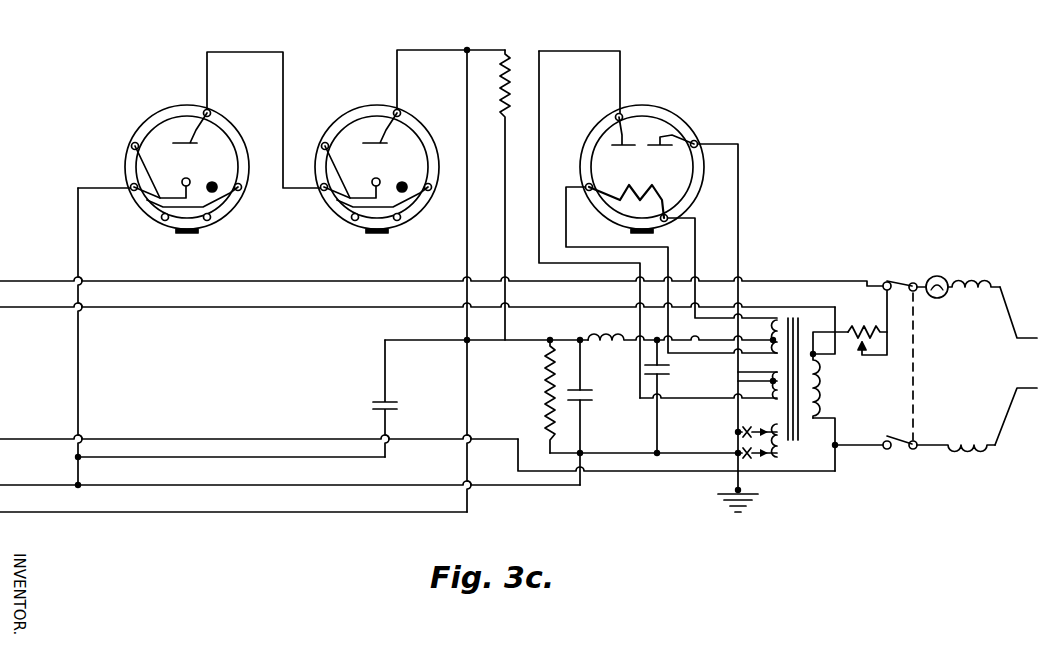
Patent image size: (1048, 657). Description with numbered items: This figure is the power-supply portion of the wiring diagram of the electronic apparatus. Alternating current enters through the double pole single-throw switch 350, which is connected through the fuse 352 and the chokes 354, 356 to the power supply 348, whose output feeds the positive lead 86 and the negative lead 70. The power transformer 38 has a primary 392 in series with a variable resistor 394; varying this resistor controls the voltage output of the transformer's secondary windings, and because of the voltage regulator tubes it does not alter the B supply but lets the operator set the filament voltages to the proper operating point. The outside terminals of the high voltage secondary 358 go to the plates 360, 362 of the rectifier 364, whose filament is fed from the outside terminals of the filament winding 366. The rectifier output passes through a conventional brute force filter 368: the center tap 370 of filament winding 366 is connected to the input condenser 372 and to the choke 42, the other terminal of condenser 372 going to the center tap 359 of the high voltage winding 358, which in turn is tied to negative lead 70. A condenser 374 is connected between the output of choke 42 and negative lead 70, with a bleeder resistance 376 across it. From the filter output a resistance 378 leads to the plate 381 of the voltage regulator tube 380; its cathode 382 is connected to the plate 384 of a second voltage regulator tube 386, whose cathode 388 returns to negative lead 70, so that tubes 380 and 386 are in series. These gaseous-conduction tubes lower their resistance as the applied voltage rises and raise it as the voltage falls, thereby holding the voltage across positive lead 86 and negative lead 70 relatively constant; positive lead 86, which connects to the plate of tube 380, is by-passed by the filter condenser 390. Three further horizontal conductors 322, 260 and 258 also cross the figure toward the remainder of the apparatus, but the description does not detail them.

The power transformer 38 is at (803, 451).
The choke 42 is at (609, 338).
The negative lead 70 is at (30, 484).
The positive lead 86 is at (359, 514).
The conductor 258 is at (148, 441).
The conductor 260 is at (188, 311).
The conductor 322 is at (165, 283).
The power supply 348 is at (1022, 344).
The double pole single-throw switch 350 is at (917, 358).
The fuse 352 is at (939, 279).
The choke 354 is at (979, 283).
The choke 356 is at (968, 452).
The high voltage secondary 358 is at (741, 384).
The center tap 359 is at (762, 389).
The plate 360 is at (618, 146).
The plate 362 is at (671, 155).
The rectifier 364 is at (657, 118).
The filament winding 366 is at (767, 335).
The brute force filter 368 is at (621, 421).
The center tap 370 is at (727, 338).
The input condenser 372 is at (664, 375).
The condenser 374 is at (588, 393).
The bleeder resistance 376 is at (548, 386).
The resistance 378 is at (512, 68).
The voltage regulator tube 380 is at (380, 116).
The plate 381 is at (390, 139).
The cathode 382 is at (373, 179).
The plate 384 is at (200, 139).
The voltage regulator tube 386 is at (170, 118).
The cathode 388 is at (183, 179).
The filter condenser 390 is at (384, 404).
The primary 392 is at (826, 385).
The variable resistor 394 is at (868, 321).